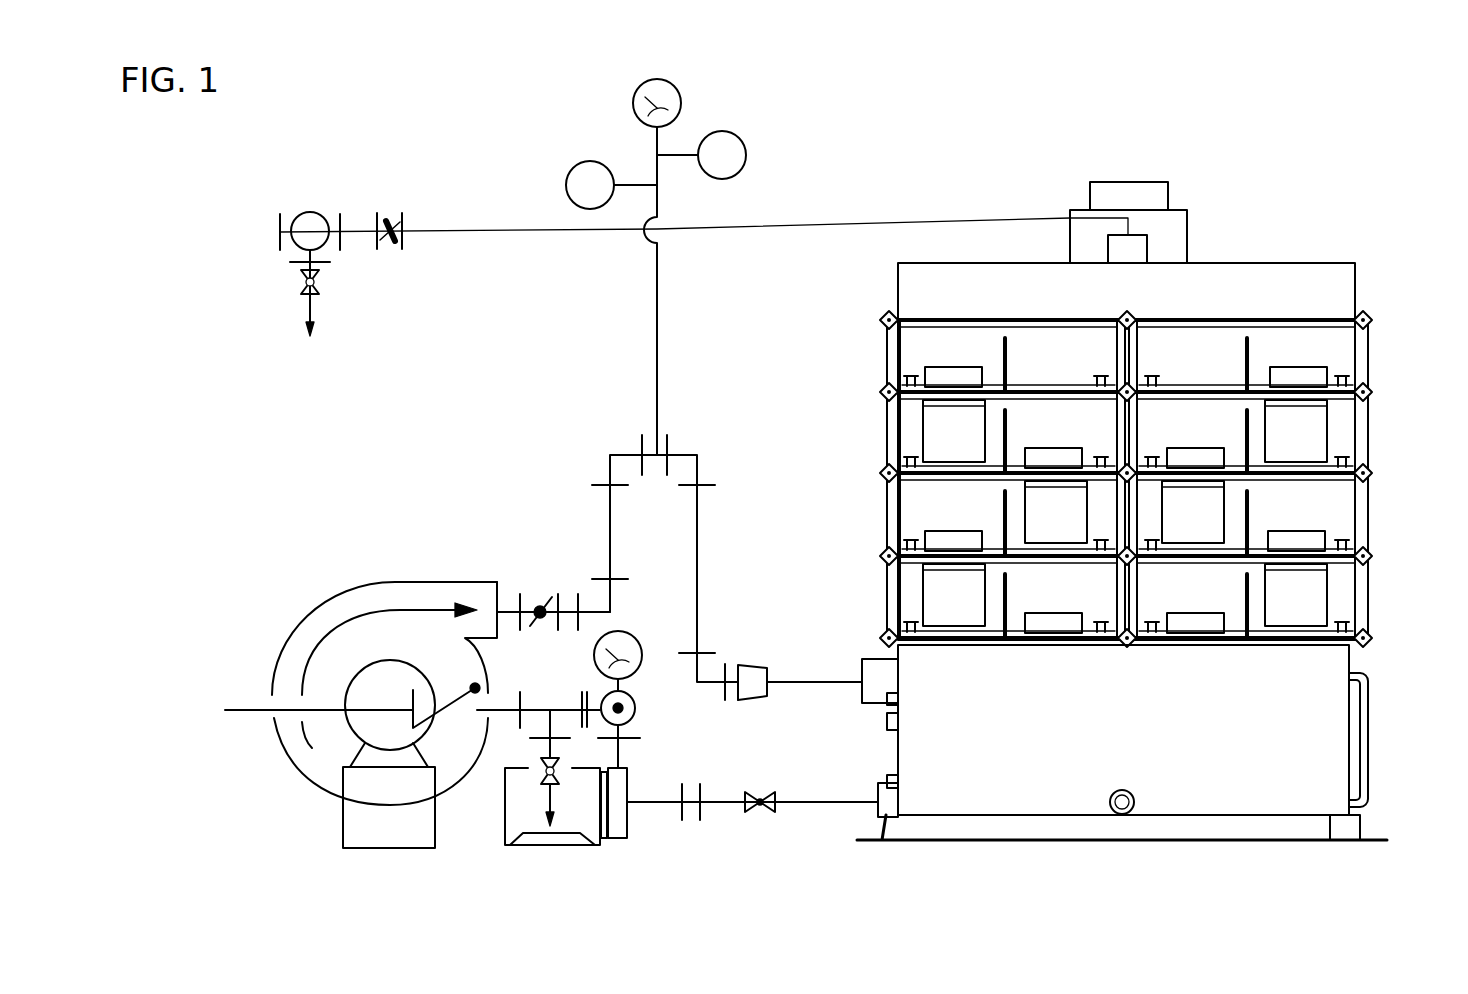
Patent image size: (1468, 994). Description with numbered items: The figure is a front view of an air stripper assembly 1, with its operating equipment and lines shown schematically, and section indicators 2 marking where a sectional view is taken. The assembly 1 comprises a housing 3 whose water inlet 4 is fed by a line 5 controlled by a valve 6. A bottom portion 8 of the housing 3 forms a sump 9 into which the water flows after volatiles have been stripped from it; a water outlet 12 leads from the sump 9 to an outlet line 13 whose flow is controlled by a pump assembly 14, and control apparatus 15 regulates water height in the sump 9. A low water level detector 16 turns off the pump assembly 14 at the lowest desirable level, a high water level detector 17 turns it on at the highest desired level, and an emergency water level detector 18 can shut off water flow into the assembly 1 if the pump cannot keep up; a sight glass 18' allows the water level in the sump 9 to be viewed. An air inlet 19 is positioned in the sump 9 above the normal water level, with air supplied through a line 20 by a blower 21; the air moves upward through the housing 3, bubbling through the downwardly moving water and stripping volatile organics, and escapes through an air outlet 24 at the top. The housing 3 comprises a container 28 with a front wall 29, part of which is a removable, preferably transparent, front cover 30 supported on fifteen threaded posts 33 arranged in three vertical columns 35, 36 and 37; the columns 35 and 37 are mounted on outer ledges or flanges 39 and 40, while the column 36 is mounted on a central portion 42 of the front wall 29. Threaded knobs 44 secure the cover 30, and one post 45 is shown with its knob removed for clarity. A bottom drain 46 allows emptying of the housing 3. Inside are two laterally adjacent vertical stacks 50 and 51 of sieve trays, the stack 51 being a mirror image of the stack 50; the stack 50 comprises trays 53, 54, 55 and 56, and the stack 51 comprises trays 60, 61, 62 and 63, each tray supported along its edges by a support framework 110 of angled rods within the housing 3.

The air stripper assembly 1 is at (1414, 195).
The section line of FIG. 2 is at (817, 298).
The housing 3 is at (1244, 264).
The water inlet 4 is at (1108, 248).
The line 5 is at (936, 224).
The valve 6 is at (403, 221).
The bottom portion 8 is at (1380, 785).
The sump 9 is at (1325, 662).
The water outlet 12 is at (878, 792).
The outlet line 13 is at (715, 801).
The pump assembly 14 is at (545, 848).
The control apparatus 15 is at (755, 816).
The low water level detector 16 is at (899, 782).
The high water level detector 17 is at (899, 722).
The emergency water level detector 18 is at (921, 689).
The sight glass 18' is at (1395, 740).
The air inlet 19 is at (862, 668).
The line 20 is at (699, 545).
The blower 21 is at (431, 582).
The air outlet 24 is at (1168, 195).
The container 28 is at (1310, 790).
The front wall 29 is at (1345, 278).
The removable front cover 30 is at (1345, 352).
The threaded posts 33 is at (1135, 390).
The vertical column 35 is at (887, 312).
The vertical column 36 is at (1137, 312).
The vertical column 37 is at (1380, 312).
The outer ledge or flange 39 is at (886, 428).
The outer ledge or flange 40 is at (1370, 425).
The central portion 42 is at (1127, 647).
The threaded knobs 44 is at (886, 473).
The post 45 is at (886, 560).
The bottom drain 46 is at (1135, 800).
The vertical stack 50 is at (980, 312).
The vertical stack 51 is at (1232, 312).
The tray 53 is at (1003, 350).
The tray 54 is at (1007, 425).
The tray 55 is at (1003, 503).
The tray 56 is at (1007, 585).
The tray 60 is at (1249, 348).
The tray 61 is at (1245, 427).
The tray 62 is at (1249, 500).
The tray 63 is at (1245, 587).
The support framework 110 is at (1334, 484).